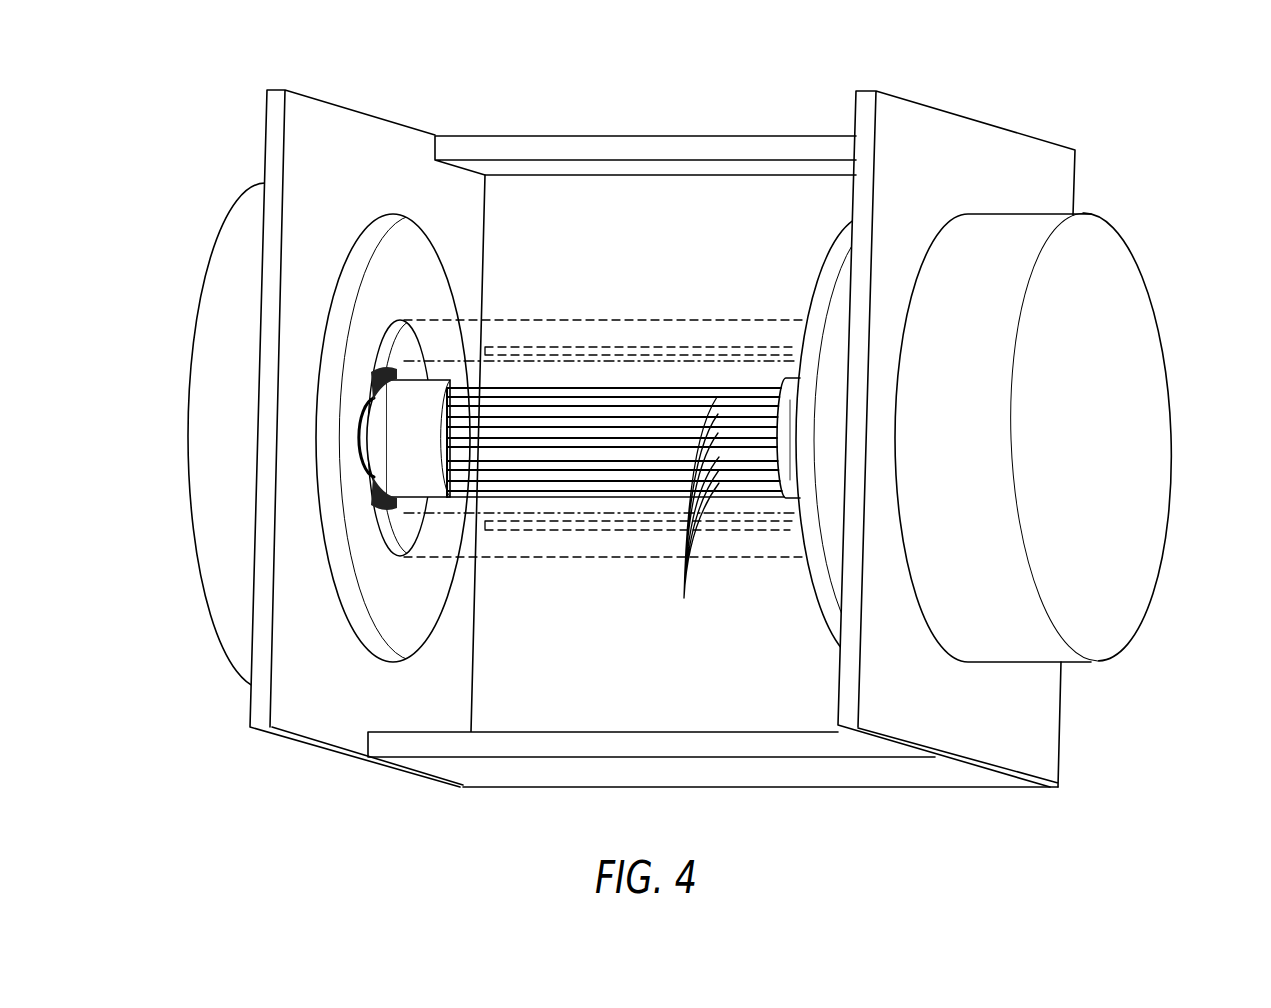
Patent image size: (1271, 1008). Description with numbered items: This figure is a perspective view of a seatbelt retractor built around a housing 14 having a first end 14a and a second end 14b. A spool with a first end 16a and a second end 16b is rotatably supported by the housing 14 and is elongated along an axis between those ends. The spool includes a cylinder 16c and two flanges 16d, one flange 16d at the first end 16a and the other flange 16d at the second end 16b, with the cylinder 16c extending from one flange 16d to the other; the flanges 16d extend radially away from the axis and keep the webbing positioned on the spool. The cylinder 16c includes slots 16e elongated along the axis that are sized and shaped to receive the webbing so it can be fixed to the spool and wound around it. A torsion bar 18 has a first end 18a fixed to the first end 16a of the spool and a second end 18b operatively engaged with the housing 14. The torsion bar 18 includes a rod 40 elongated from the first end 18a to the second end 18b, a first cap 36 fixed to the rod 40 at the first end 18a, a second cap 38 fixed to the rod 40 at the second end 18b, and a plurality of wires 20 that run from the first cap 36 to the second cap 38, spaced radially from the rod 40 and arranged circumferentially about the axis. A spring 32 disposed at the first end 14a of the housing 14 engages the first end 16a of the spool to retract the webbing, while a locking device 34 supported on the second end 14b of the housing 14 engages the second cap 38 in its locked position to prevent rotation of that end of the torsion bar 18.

The housing 14 is at (597, 135).
The first end of the housing 14a is at (1077, 183).
The second end of the housing 14b is at (266, 130).
The first end of the spool 16a is at (810, 285).
The second end of the spool 16b is at (420, 267).
The cylinder 16c is at (528, 318).
The flange 16d is at (383, 268).
The slot 16e is at (657, 540).
The torsion bar 18 is at (533, 500).
The first end of the torsion bar 18a is at (780, 407).
The second end of the torsion bar 18b is at (392, 428).
The wire 20 is at (695, 522).
The spring 32 is at (1125, 320).
The locking device 34 is at (187, 307).
The first cap 36 is at (788, 440).
The second cap 38 is at (393, 468).
The rod 40 is at (590, 445).